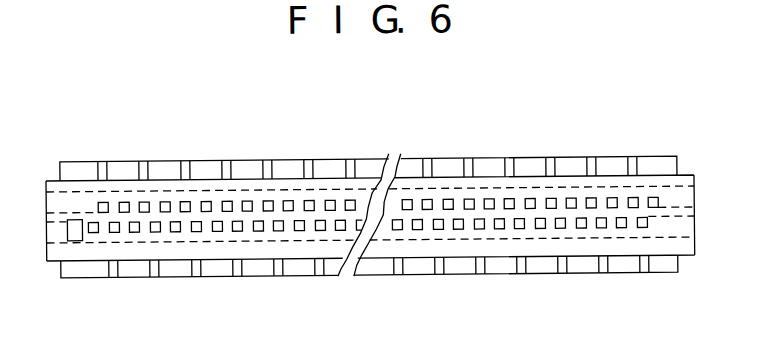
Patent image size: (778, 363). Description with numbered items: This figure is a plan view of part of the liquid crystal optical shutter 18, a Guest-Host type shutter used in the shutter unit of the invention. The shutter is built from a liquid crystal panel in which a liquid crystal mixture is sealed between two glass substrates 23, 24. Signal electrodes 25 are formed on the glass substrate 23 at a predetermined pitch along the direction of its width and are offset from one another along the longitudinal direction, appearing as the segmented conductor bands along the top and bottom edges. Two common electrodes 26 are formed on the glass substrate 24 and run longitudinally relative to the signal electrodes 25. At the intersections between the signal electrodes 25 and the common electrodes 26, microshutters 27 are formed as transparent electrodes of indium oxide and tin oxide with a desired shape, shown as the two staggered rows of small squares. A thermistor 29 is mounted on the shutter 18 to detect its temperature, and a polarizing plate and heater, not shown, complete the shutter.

The liquid crystal optical shutter 18 is at (328, 150).
The glass substrate 23 is at (77, 170).
The glass substrate 24 is at (50, 264).
The signal electrodes 25 is at (101, 168).
The common electrodes 26 is at (57, 231).
The microshutters 27 is at (101, 204).
The thermistor 29 is at (72, 242).